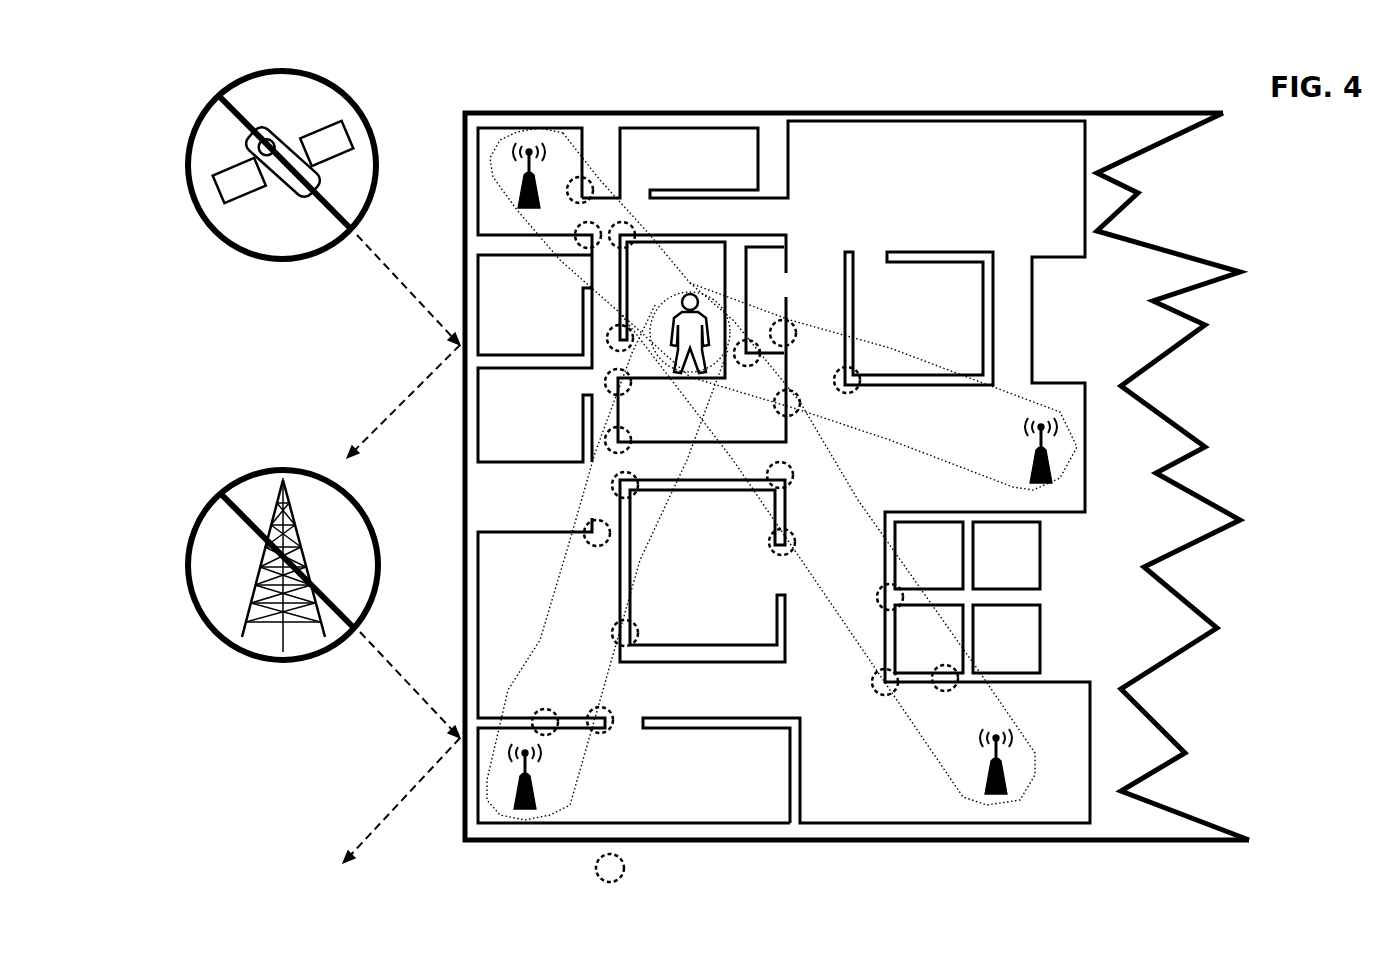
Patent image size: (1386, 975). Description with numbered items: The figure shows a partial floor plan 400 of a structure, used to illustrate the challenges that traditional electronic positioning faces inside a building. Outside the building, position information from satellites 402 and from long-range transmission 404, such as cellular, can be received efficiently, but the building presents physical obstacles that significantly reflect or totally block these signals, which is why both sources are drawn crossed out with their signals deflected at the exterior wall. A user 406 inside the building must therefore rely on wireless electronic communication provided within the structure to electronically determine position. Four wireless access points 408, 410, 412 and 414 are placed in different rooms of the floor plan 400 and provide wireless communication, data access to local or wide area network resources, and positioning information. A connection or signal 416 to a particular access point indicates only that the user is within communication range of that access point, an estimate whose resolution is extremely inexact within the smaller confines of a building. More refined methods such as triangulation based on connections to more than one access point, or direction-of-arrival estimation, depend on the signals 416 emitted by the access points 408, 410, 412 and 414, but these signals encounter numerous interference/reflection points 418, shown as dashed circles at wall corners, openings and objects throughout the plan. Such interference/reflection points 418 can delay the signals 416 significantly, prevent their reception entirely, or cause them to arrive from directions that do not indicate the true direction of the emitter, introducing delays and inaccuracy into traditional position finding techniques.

The partial floor plan 400 is at (460, 140).
The satellites 402 is at (200, 115).
The long-range transmission 404 is at (200, 515).
The user 406 is at (668, 318).
The wireless access point 408 is at (516, 183).
The wireless access point 410 is at (1027, 455).
The wireless access point 412 is at (540, 792).
The wireless access point 414 is at (977, 767).
The signals 416 is at (890, 345).
The interference/reflection points 418 is at (870, 588).